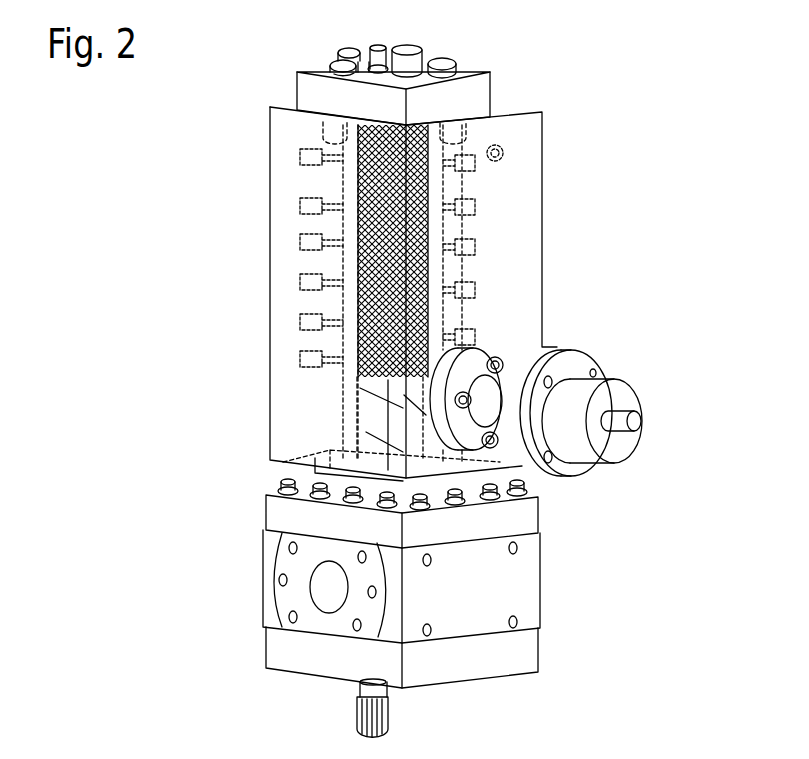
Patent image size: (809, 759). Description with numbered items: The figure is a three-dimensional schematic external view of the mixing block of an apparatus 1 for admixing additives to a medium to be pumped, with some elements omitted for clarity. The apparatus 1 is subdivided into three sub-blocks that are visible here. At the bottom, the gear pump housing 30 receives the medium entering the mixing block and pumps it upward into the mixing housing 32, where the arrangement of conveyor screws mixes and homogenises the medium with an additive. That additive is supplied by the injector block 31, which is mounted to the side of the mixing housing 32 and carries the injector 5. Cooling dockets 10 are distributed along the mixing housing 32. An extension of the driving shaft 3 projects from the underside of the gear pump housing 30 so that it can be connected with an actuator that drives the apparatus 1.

The apparatus 1 is at (657, 147).
The driving shaft 3 is at (389, 717).
The injector 5 is at (563, 355).
The cooling dockets 10 is at (300, 197).
The gear pump housing 30 is at (593, 498).
The injector block 31 is at (680, 350).
The mixing housing 32 is at (218, 110).